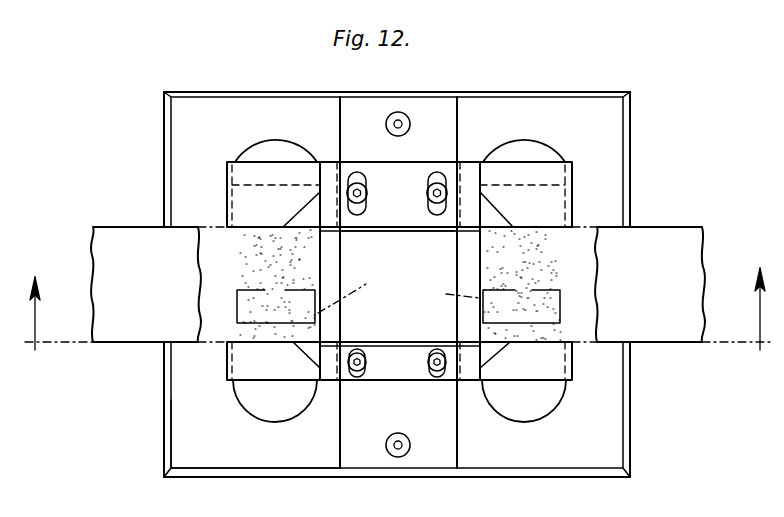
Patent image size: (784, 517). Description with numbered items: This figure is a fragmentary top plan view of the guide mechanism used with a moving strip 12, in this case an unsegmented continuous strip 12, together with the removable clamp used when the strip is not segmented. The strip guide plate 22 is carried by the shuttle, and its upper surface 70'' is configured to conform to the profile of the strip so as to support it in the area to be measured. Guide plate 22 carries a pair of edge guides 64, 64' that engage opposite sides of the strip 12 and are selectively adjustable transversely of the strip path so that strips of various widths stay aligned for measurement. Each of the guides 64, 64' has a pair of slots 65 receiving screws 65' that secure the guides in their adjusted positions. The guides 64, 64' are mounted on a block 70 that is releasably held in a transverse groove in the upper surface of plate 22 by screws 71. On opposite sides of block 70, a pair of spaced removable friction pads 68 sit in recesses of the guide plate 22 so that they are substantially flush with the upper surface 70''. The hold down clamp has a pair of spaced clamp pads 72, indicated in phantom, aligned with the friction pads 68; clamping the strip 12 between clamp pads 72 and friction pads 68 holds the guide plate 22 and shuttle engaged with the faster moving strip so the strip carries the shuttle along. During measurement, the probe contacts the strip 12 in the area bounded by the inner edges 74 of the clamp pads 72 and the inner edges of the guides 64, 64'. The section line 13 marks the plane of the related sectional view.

The strip 12 is at (105, 228).
The section line 13- 13 is at (393, 329).
The strip guide plate 22 is at (612, 115).
The edge guide 64 is at (399, 264).
The edge guide 64' is at (398, 288).
The slots 65 is at (397, 294).
The screws 65' is at (404, 266).
The friction pads 68 is at (235, 248).
The block 70 is at (398, 264).
The upper surface 70'' is at (255, 434).
The screws 71 is at (395, 112).
The clamp pads 72 is at (237, 300).
The inner edges 74 is at (446, 294).